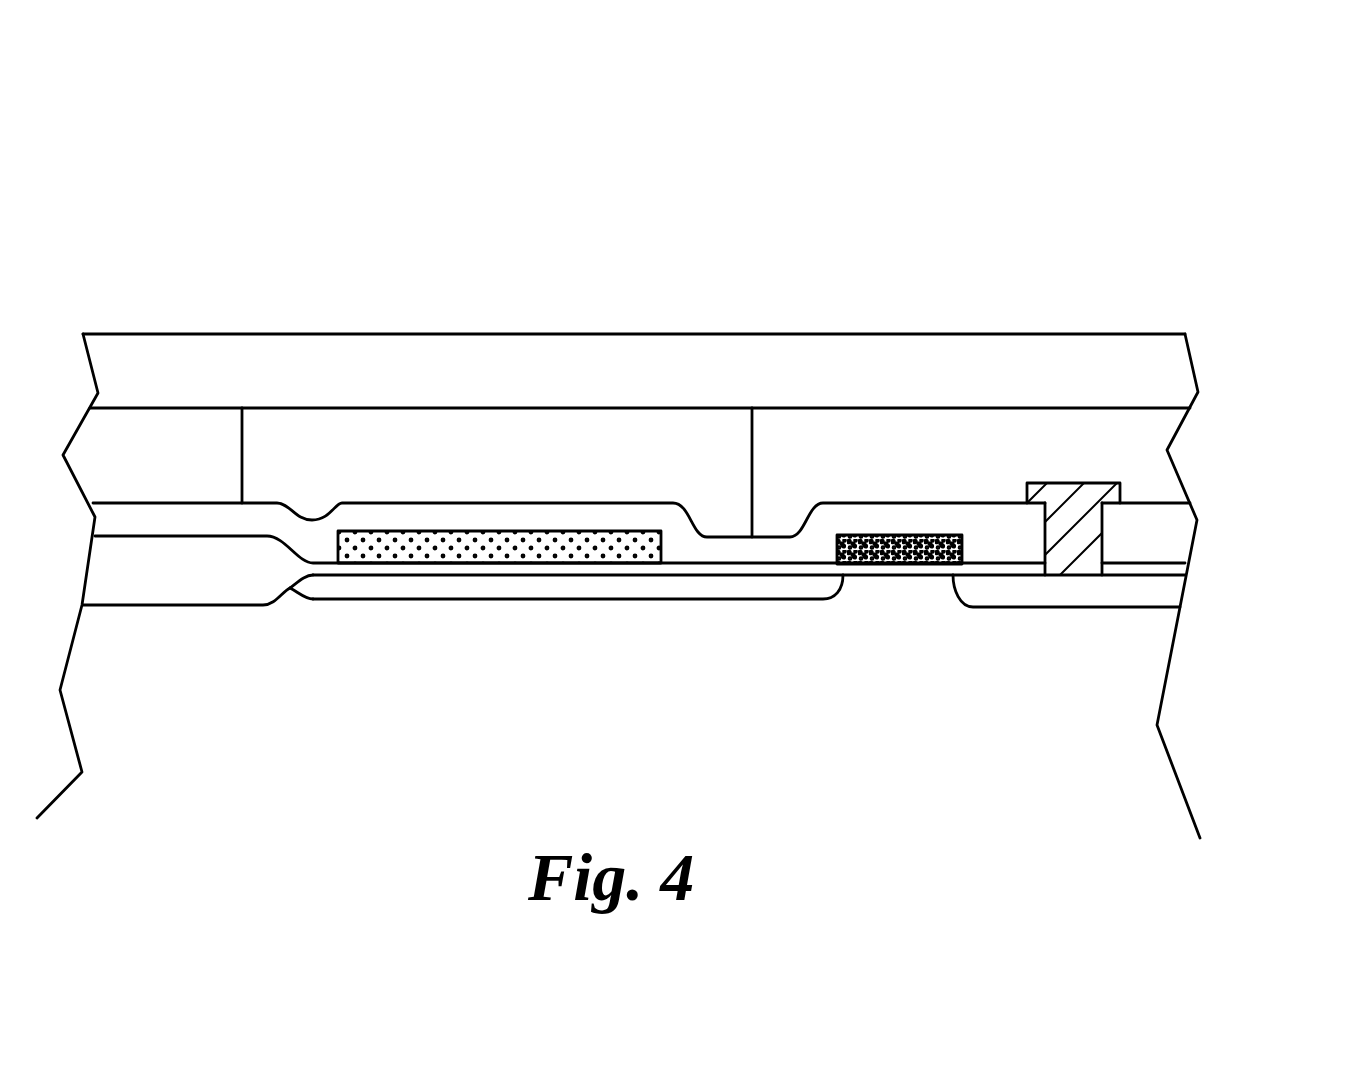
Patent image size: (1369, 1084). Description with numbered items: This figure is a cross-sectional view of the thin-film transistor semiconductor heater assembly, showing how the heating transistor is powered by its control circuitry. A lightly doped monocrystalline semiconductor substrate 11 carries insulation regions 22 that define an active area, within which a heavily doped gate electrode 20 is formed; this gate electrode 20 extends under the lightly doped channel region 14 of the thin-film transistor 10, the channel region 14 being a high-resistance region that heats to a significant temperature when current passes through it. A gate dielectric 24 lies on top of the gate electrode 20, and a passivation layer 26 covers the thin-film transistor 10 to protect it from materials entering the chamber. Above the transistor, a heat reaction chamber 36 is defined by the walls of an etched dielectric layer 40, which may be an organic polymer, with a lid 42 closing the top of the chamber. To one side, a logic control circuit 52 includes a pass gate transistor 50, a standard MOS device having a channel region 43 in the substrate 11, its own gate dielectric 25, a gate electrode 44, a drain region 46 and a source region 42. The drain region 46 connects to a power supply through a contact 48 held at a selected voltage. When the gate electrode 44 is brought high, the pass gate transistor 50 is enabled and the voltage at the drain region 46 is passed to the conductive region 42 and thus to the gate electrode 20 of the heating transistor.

The thin-film transistor 10 is at (362, 717).
The semiconductor substrate 11 is at (1148, 663).
The channel region 14 is at (552, 545).
The gate electrode 20 is at (432, 588).
The insulation regions 22 is at (180, 587).
The gate dielectric 24 is at (345, 570).
The gate dielectric 25 is at (878, 570).
The passivation layer 26 is at (828, 527).
The heat reaction chamber 36 is at (542, 448).
The dielectric layer 40 is at (132, 460).
The conductive region 42 is at (372, 365).
The channel region 43 is at (923, 643).
The gate electrode 44 is at (918, 548).
The drain region 46 is at (1080, 588).
The contact 48 is at (1088, 544).
The pass gate transistor 50 is at (892, 468).
The logic control circuit 52 is at (1195, 268).